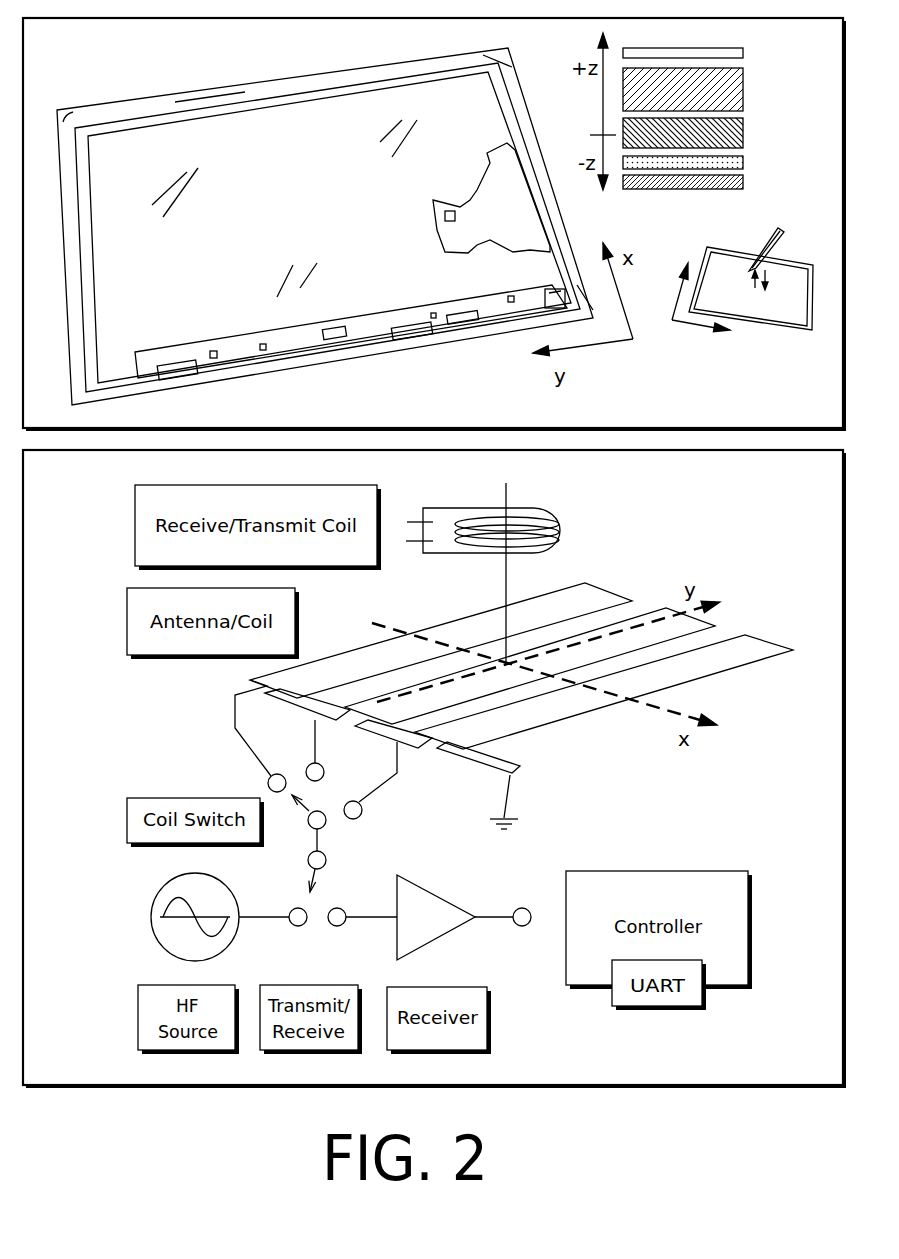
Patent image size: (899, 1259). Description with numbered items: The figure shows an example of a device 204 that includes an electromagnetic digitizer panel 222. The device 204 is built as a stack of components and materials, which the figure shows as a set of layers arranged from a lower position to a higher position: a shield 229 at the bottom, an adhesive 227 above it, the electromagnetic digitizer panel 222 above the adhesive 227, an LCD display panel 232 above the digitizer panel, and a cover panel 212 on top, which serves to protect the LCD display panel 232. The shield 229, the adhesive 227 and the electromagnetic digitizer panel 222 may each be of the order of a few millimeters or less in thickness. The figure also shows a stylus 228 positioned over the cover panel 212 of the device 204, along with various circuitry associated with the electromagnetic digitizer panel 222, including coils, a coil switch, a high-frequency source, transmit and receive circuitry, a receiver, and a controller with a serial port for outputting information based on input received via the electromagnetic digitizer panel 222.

The device 204 is at (699, 358).
The cover panel 212 is at (726, 201).
The electromagnetic digitizer panel 222 is at (710, 535).
The adhesive 227 is at (720, 153).
The stylus 228 is at (763, 252).
The shield 229 is at (267, 230).
The LCD display panel 232 is at (720, 89).